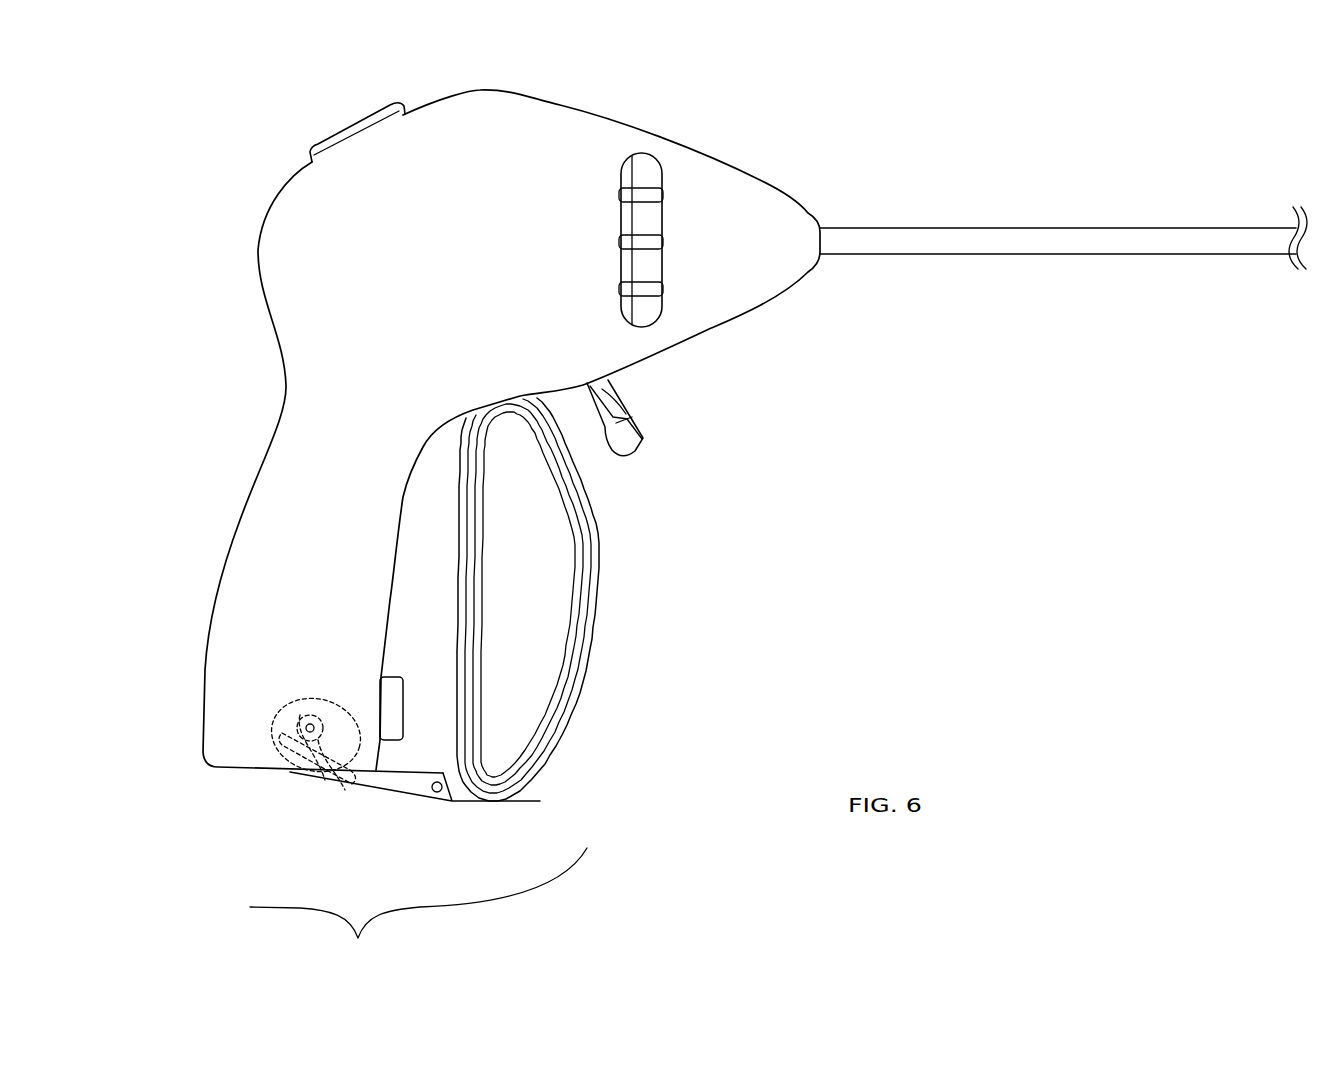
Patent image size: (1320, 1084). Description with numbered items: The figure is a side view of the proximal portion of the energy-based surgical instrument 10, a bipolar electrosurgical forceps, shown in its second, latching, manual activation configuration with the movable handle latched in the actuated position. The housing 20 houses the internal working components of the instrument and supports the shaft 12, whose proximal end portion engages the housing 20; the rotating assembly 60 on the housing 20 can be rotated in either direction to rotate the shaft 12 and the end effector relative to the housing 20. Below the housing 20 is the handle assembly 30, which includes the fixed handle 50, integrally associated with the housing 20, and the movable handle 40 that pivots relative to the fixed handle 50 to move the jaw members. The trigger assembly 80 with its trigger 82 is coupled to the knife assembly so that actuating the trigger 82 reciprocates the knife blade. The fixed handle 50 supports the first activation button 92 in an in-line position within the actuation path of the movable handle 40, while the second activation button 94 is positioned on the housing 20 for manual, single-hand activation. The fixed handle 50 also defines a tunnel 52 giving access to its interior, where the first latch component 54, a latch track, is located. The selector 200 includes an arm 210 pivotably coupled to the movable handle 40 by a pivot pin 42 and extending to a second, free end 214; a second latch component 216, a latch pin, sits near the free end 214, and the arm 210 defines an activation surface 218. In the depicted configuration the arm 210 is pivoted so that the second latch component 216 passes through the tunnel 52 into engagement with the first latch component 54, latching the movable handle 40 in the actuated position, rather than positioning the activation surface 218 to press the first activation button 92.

The energy-based surgical instrument 10 is at (1005, 125).
The shaft 12 is at (1037, 240).
The housing 20 is at (543, 127).
The handle assembly 30 is at (353, 827).
The movable handle 40 is at (578, 678).
The pivot pin 42 is at (440, 793).
The fixed handle 50 is at (330, 798).
The tunnel 52 is at (360, 778).
The first latch component 54 is at (290, 755).
The rotating assembly 60 is at (643, 215).
The trigger assembly 80 is at (657, 434).
The trigger 82 is at (648, 443).
The first activation button 92 is at (386, 700).
The second activation button 94 is at (372, 107).
The selector 200 is at (409, 805).
The arm 210 is at (390, 777).
The second, free end 214 is at (352, 780).
The second latch component 216 is at (314, 760).
The activation surface 218 is at (397, 790).